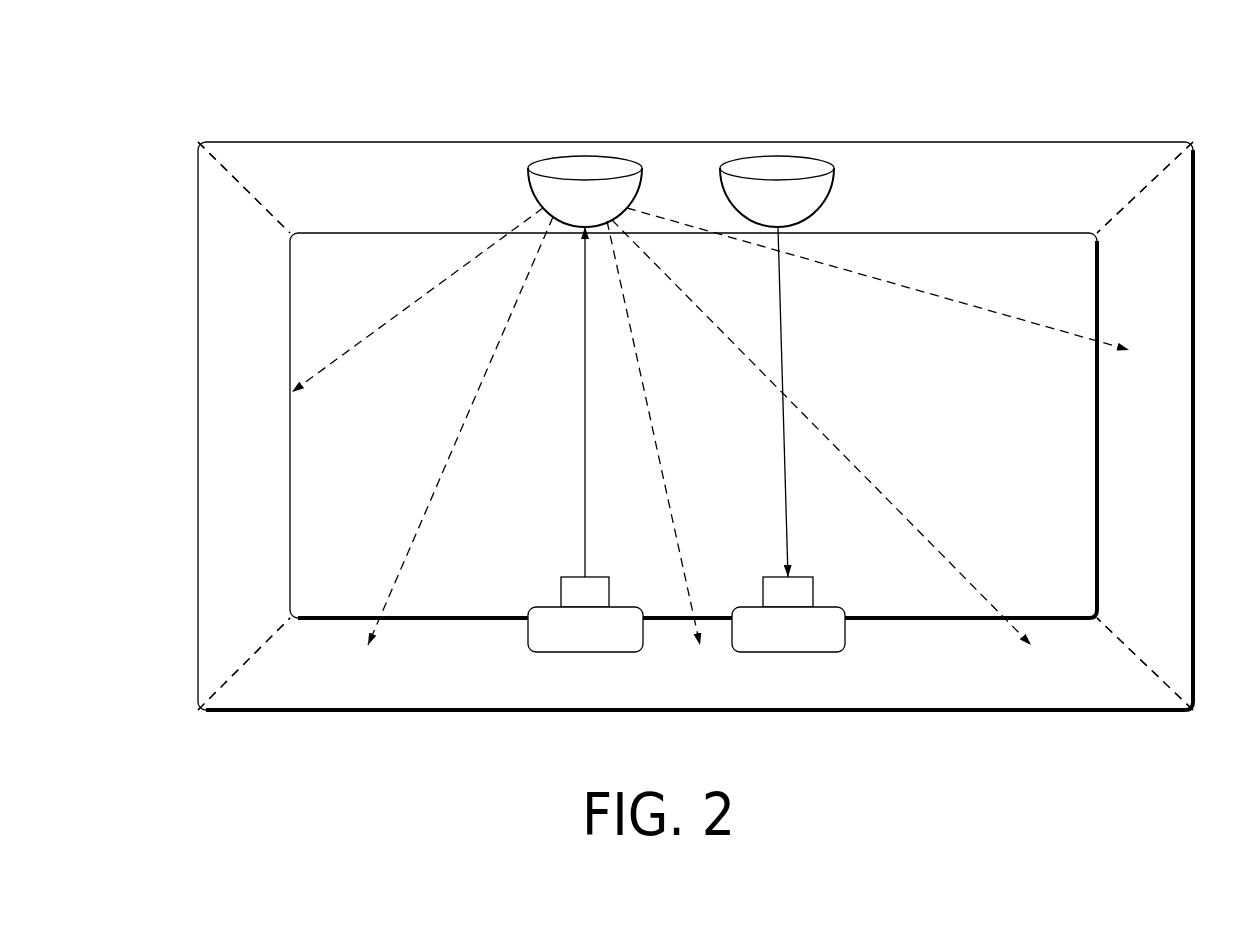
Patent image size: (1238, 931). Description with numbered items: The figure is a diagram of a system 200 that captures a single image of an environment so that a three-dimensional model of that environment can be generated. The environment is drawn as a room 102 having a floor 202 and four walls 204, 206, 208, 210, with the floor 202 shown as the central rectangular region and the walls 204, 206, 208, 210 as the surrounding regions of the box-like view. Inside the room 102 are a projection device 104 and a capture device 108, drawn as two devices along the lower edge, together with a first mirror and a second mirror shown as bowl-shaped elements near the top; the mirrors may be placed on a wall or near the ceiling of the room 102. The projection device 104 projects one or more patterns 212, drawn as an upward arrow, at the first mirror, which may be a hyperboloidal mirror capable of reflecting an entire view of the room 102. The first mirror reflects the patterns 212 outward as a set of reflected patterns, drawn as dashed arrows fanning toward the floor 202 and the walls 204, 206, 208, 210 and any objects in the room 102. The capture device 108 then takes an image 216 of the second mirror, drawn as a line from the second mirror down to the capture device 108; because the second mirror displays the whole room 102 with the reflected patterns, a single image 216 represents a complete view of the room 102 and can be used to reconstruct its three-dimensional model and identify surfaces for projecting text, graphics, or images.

The system 200 is at (644, 413).
The room 102 is at (695, 447).
The projection device 104 is at (546, 654).
The capture device 108 is at (835, 654).
The floor 202 is at (960, 605).
The wall 204 is at (372, 200).
The wall 206 is at (252, 445).
The wall 208 is at (730, 686).
The wall 210 is at (1160, 438).
The patterns 212 is at (541, 402).
The image 216 is at (836, 402).